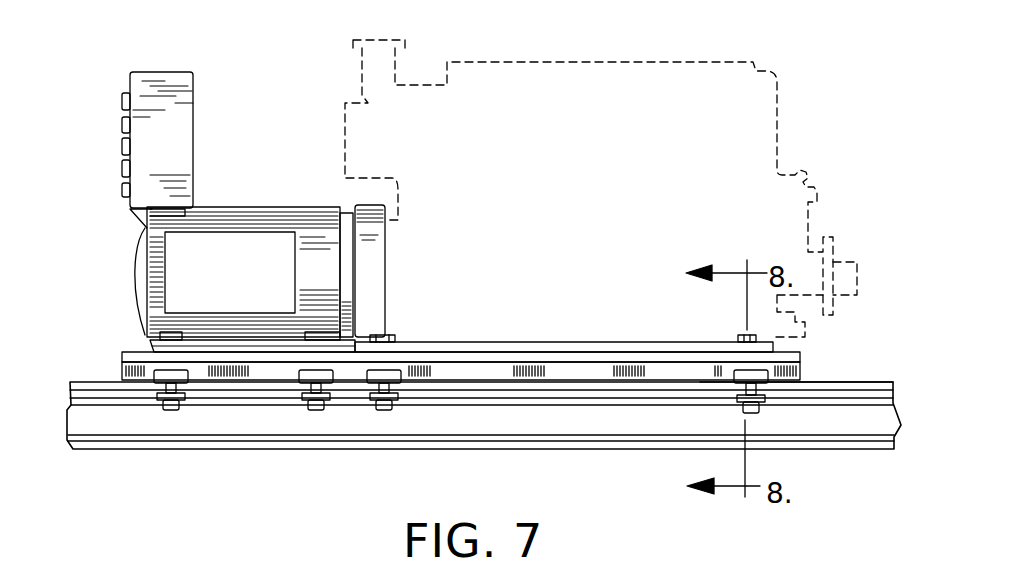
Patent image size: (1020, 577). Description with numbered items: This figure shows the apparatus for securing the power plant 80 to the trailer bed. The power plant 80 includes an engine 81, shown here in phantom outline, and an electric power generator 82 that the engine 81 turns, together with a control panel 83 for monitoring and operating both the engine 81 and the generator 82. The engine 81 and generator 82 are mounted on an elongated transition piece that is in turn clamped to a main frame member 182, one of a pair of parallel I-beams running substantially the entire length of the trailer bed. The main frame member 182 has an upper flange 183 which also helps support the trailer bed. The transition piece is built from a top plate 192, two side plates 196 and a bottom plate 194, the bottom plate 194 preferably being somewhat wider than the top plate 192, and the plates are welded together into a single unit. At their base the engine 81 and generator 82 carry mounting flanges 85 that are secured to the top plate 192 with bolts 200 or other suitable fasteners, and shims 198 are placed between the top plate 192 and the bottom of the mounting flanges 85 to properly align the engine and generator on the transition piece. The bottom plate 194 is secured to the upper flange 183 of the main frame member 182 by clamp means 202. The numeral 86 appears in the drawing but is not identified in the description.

The power plant 80 is at (427, 145).
The engine 81 is at (567, 62).
The electric power generator 82 is at (240, 207).
The control panel 83 is at (193, 112).
The mounting flanges 85 is at (604, 350).
The motor base plate 86 is at (150, 342).
The main frame members 182 is at (545, 428).
The upper flange 183 is at (843, 385).
The top plate 192 is at (542, 372).
The bottom plate 194 is at (432, 362).
The side plates 196 is at (485, 373).
The shims 198 is at (640, 355).
The bolts 200 is at (745, 336).
The clamp means 202 is at (718, 372).